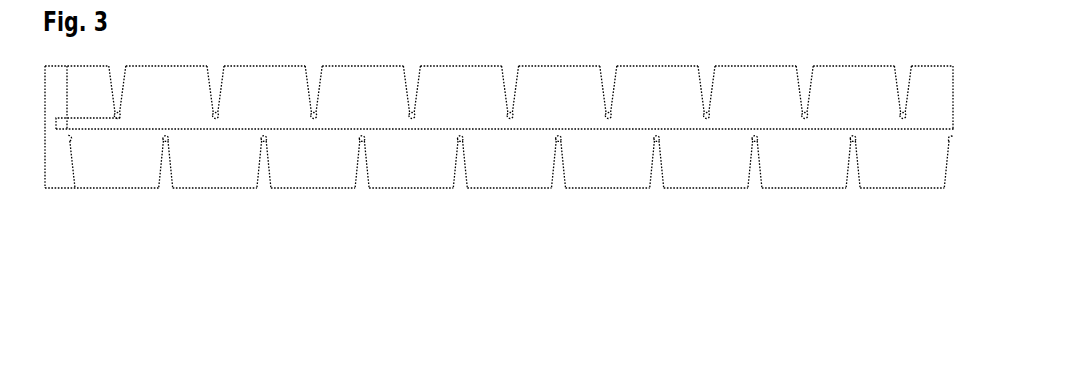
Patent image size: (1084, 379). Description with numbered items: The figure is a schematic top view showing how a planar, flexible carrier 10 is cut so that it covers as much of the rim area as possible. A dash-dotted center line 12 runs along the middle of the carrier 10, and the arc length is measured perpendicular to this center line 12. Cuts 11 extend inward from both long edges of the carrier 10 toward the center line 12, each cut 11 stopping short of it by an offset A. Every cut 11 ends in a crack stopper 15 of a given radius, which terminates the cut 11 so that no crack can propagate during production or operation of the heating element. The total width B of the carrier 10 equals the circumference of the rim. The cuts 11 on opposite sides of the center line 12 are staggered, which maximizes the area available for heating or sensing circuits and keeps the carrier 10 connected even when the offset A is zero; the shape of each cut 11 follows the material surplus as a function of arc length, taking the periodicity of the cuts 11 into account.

The planar flexible carrier 10 is at (213, 158).
The cuts 11 is at (167, 177).
The crack stopper 15 is at (265, 138).
The center line 12 is at (318, 128).
The offset A is at (55, 128).
The total width B is at (45, 171).